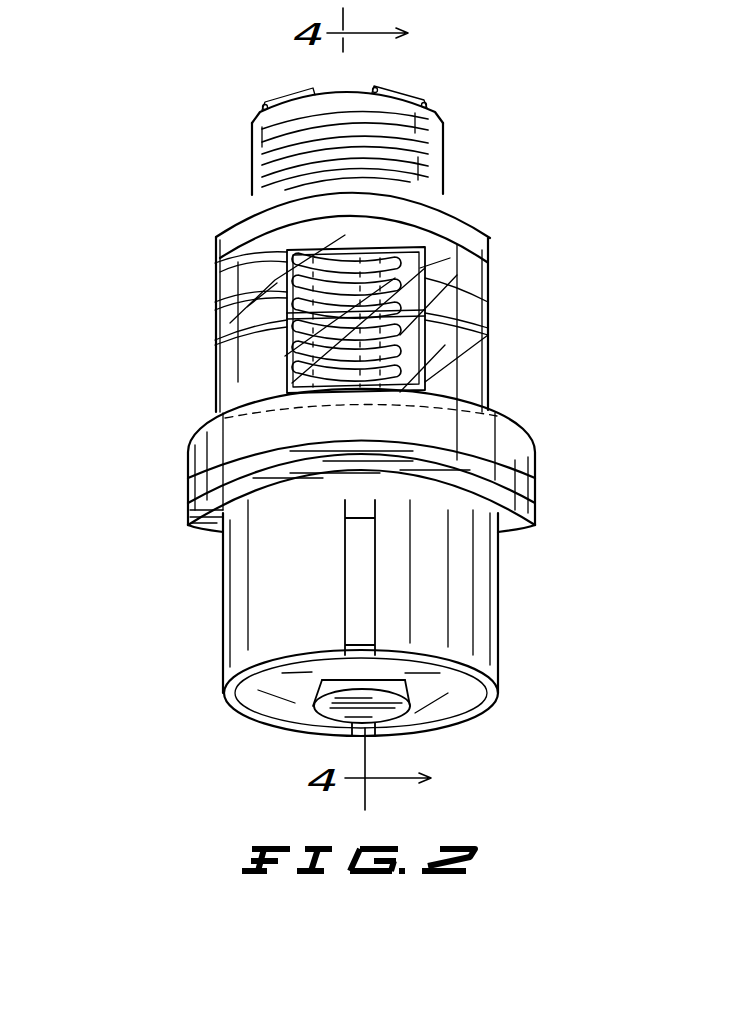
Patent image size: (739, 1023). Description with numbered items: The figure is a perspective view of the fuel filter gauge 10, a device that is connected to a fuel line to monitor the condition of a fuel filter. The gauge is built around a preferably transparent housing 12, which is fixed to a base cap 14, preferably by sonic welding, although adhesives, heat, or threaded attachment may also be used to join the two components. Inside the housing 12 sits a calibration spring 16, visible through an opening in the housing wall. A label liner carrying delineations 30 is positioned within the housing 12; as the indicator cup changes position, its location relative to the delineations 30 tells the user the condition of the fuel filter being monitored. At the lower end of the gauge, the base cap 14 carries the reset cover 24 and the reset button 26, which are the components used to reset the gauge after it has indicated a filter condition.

The fuel filter gauge 10 is at (186, 116).
The housing 12 is at (482, 233).
The base cap 14 is at (458, 582).
The calibration spring 16 is at (305, 338).
The reset cover 24 is at (452, 687).
The reset button 26 is at (340, 713).
The delineations 30 is at (403, 345).